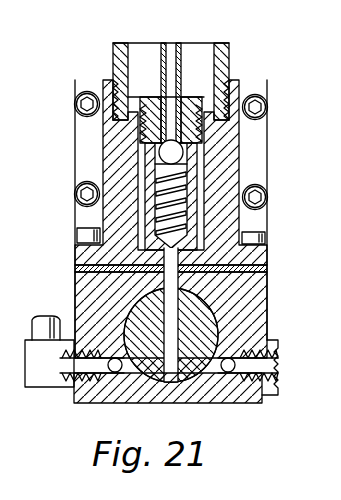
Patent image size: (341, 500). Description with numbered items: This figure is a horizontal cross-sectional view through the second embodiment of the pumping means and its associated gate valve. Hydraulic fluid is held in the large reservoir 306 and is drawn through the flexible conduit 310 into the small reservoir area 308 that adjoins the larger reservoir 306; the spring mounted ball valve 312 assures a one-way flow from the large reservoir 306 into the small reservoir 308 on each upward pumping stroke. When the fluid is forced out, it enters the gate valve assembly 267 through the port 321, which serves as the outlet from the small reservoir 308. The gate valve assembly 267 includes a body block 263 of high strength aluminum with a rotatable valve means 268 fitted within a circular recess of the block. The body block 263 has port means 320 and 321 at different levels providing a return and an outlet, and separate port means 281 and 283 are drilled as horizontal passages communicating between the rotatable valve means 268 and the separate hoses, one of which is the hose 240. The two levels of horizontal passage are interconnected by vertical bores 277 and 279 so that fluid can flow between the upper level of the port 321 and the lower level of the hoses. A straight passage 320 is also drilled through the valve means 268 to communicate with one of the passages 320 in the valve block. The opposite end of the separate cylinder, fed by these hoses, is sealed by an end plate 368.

The reservoir 306 is at (137, 56).
The conduit 310 is at (190, 58).
The spring mounted ball valve 312 is at (150, 150).
The small reservoir area 308 is at (150, 173).
The port means 320 is at (135, 243).
The port 321 is at (170, 283).
The hose 240 is at (40, 317).
The valve means 268 is at (159, 341).
The port means 283 is at (67, 383).
The gate valve assembly 267 is at (112, 415).
The vertical bore 277 is at (117, 373).
The body block 263 is at (180, 398).
The vertical bore 279 is at (238, 376).
The port means 281 is at (263, 392).
The end plate 368 is at (24, 9).